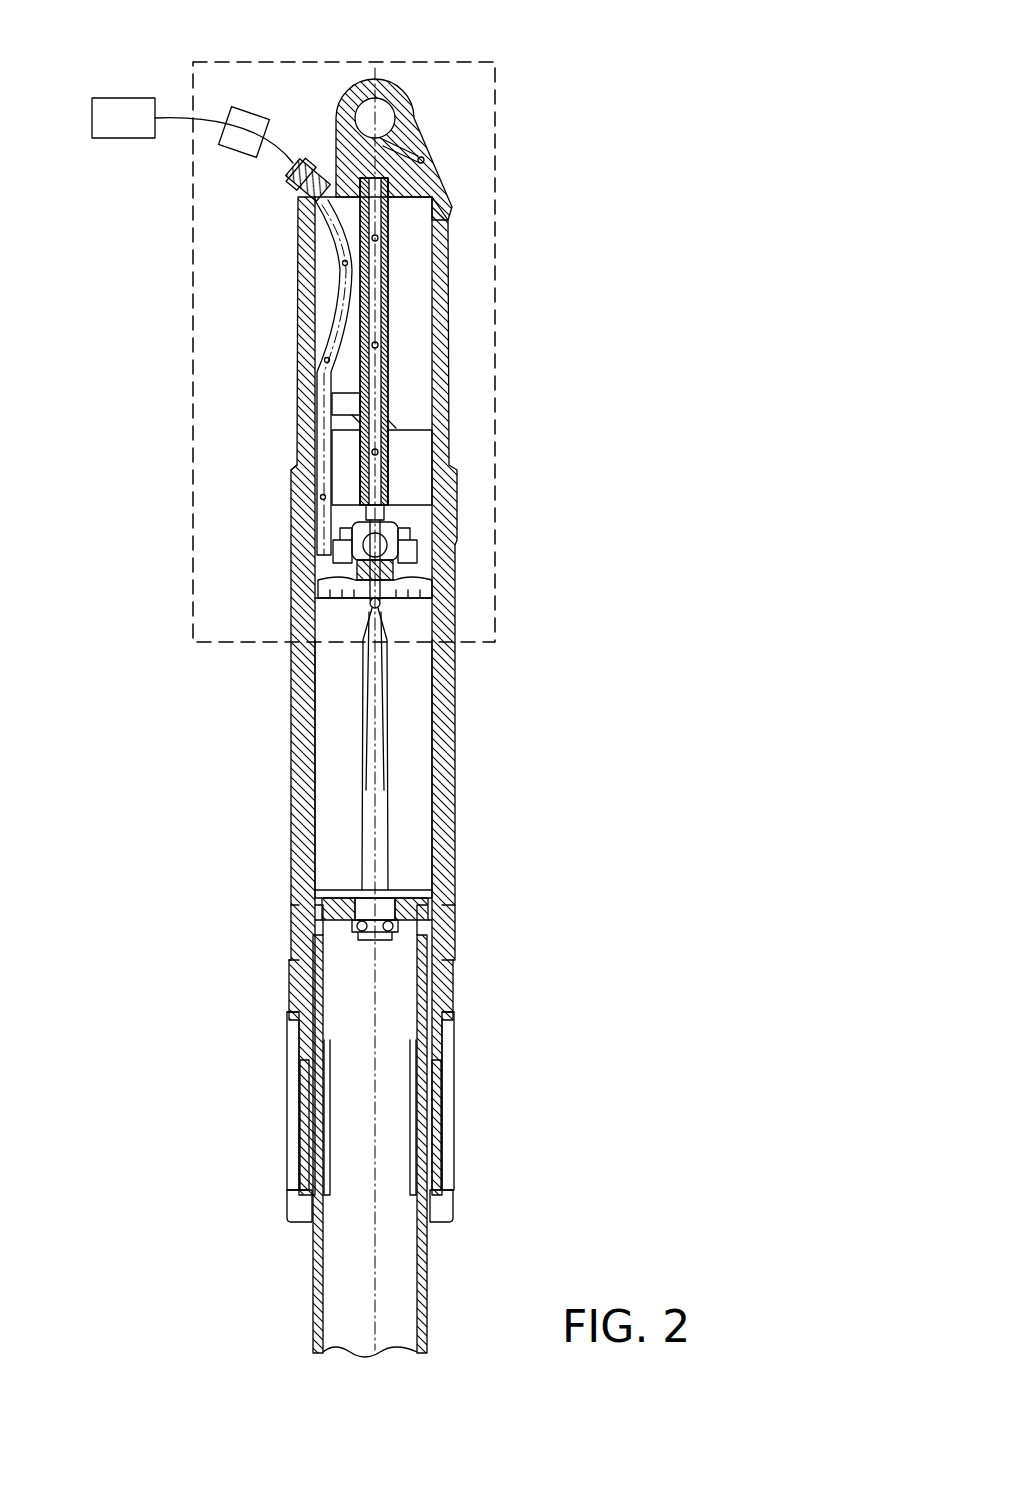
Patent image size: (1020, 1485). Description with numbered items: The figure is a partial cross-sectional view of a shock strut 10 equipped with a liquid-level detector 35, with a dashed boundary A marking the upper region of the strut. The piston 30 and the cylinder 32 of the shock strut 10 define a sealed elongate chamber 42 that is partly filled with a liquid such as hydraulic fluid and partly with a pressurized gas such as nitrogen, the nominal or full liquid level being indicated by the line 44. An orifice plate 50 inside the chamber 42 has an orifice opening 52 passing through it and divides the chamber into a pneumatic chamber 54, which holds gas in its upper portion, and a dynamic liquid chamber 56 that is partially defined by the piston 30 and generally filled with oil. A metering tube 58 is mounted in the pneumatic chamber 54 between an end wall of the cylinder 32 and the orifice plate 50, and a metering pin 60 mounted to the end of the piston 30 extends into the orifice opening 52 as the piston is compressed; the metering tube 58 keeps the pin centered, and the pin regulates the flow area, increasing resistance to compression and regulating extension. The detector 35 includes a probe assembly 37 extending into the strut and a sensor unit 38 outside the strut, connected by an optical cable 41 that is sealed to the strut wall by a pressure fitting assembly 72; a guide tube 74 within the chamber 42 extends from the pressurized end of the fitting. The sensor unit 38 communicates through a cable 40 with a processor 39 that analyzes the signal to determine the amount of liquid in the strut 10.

The shock strut 10 is at (488, 804).
The piston 30 is at (422, 1266).
The cylinder 32 is at (442, 763).
The detector 35 is at (216, 297).
The probe assembly 37 is at (310, 479).
The sensor unit 38 is at (238, 152).
The processor 39 is at (132, 140).
The cable 40 is at (182, 117).
The optical cable 41 is at (281, 150).
The chamber 42 is at (333, 677).
The line 44 is at (412, 428).
The orifice plate 50 is at (418, 590).
The orifice opening 52 is at (332, 581).
The pneumatic chamber 54 is at (412, 295).
The dynamic liquid chamber 56 is at (406, 703).
The metering tube 58 is at (383, 258).
The metering pin 60 is at (372, 808).
The pressure fitting assembly 72 is at (294, 191).
The guide tube 74 is at (318, 512).
The detail region A is at (498, 108).